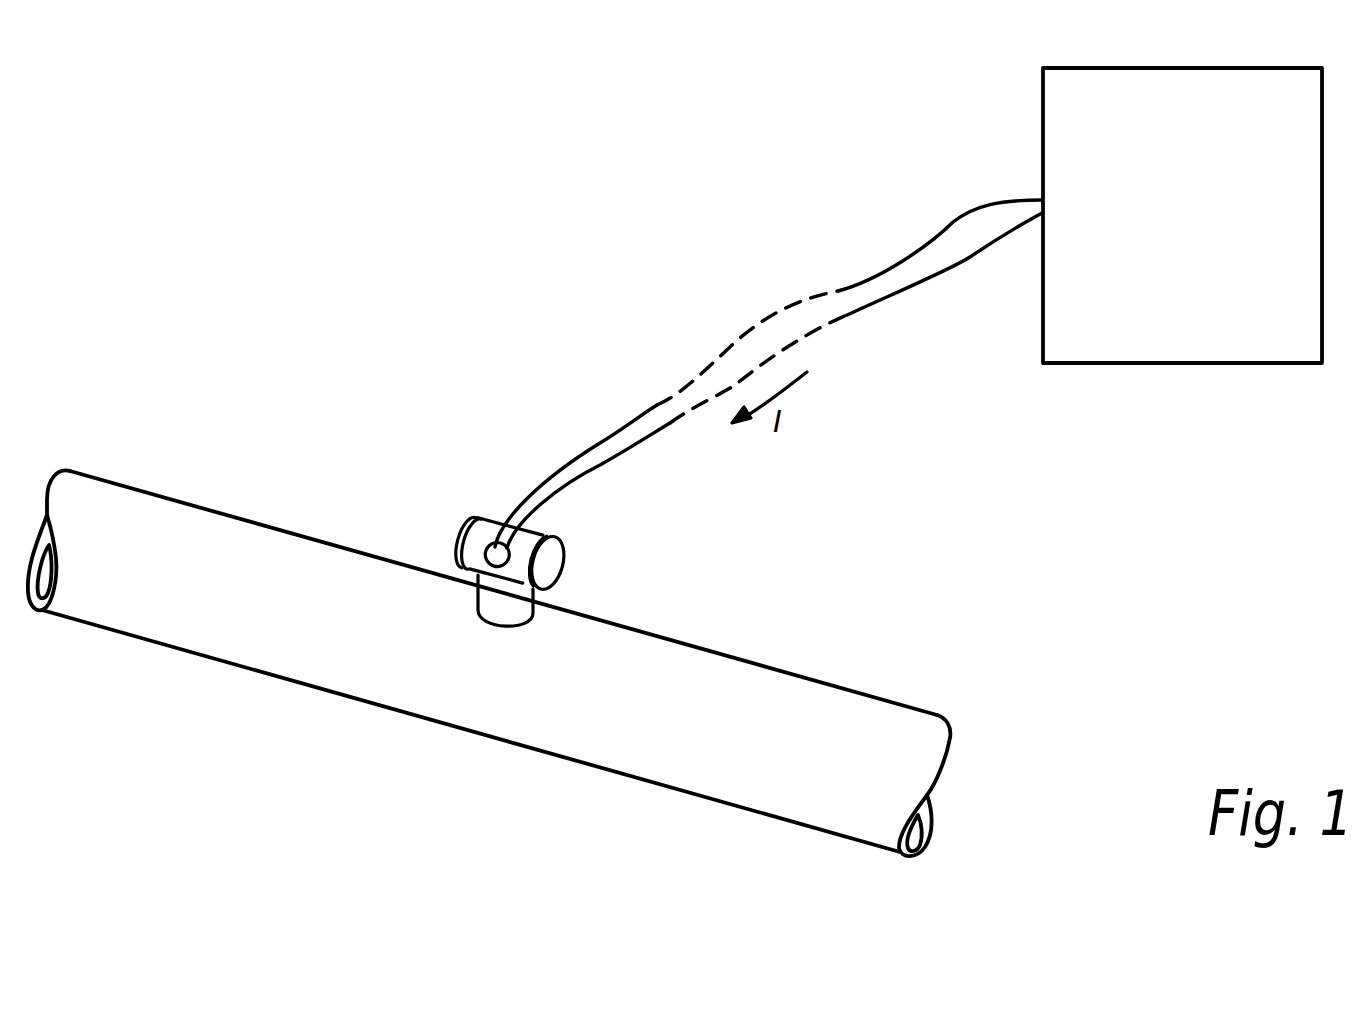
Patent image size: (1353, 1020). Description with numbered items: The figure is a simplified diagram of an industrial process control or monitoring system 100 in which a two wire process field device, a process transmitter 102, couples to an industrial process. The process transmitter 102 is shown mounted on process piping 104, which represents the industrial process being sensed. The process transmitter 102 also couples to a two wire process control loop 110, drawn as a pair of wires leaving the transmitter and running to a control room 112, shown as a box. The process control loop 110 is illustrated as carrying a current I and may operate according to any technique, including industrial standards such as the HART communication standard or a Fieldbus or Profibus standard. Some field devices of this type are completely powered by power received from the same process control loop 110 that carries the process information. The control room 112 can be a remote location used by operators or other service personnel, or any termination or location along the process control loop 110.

The industrial process control or monitoring system 100 is at (552, 357).
The process transmitter 102 is at (487, 528).
The process piping 104 is at (279, 679).
The two wire process control loop 110 is at (634, 452).
The control room 112 is at (1113, 362).